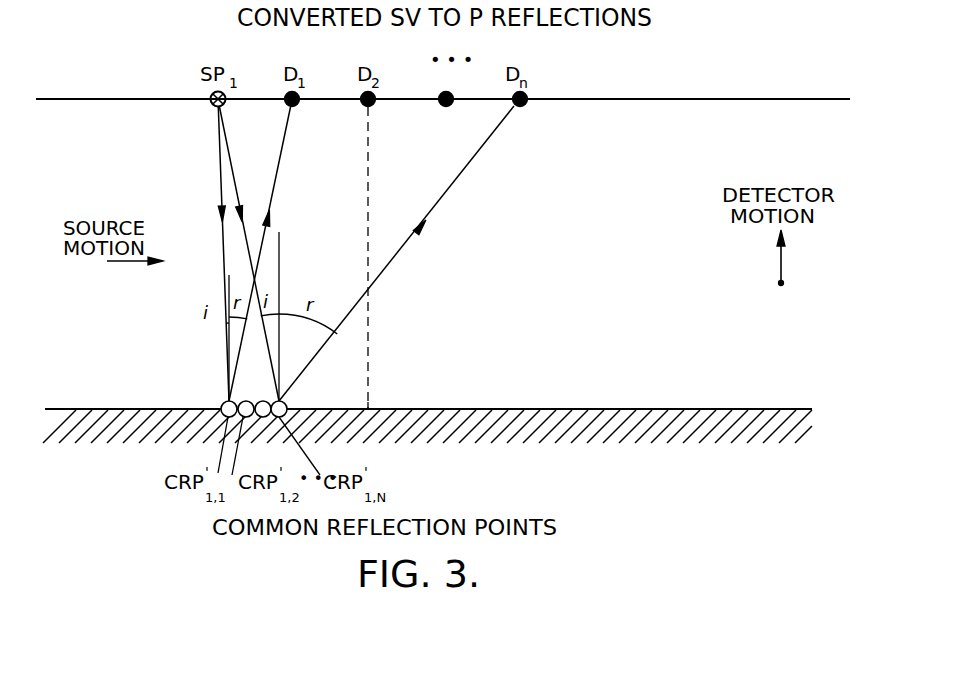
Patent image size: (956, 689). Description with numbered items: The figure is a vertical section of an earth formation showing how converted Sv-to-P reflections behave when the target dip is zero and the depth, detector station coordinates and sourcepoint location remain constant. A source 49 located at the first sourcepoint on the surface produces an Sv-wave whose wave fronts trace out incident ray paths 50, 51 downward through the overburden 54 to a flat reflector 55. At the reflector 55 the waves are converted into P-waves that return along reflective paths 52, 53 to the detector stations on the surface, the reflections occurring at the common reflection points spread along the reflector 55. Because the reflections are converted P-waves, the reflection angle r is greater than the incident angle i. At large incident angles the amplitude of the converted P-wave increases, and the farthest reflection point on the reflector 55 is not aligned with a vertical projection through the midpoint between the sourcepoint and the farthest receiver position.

The source 49 is at (212, 106).
The incident ray path 50 is at (219, 194).
The incident ray path 51 is at (232, 172).
The reflective path 52 is at (274, 191).
The reflective path 53 is at (452, 189).
The overburden 54 is at (563, 302).
The reflector 55 is at (578, 407).